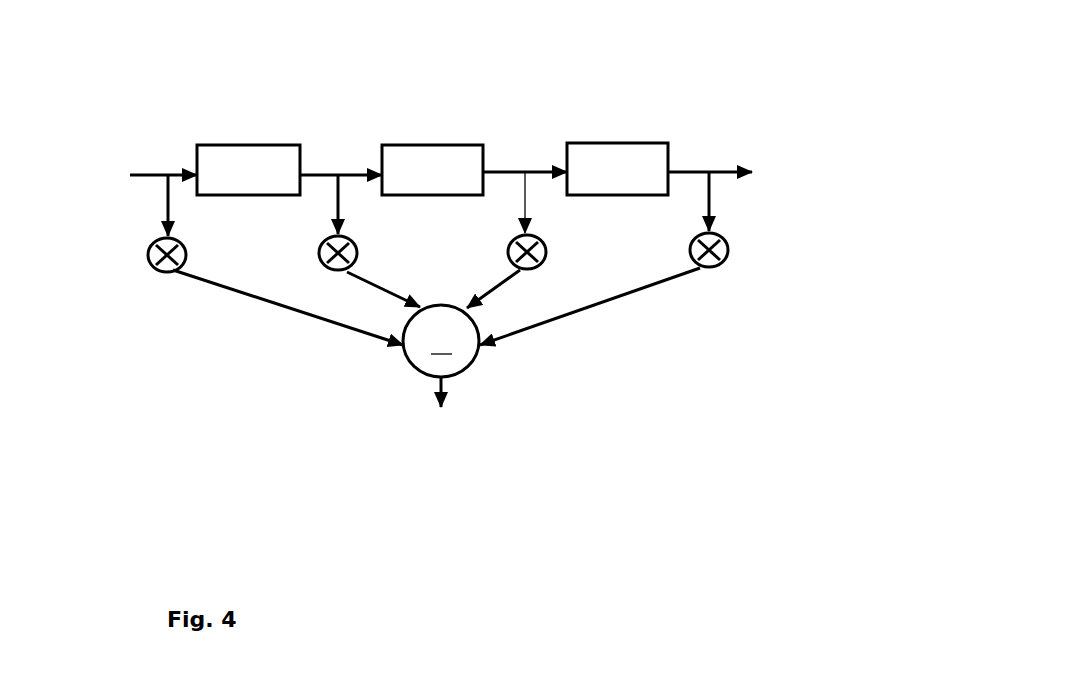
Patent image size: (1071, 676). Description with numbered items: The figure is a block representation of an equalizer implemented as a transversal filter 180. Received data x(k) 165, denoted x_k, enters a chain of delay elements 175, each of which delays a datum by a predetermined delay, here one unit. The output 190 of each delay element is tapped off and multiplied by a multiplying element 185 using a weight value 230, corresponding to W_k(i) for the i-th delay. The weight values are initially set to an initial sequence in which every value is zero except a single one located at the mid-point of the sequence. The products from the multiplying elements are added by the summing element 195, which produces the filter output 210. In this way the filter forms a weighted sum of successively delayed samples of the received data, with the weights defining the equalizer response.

The received data x(k) 165 is at (180, 112).
The delay element 175 is at (273, 127).
The transversal filter 180 is at (433, 522).
The multiplying element 185 is at (313, 273).
The output of delay element 190 is at (510, 193).
The summing element 195 is at (473, 367).
The filter output 210 is at (460, 392).
The weight value 230 is at (142, 268).